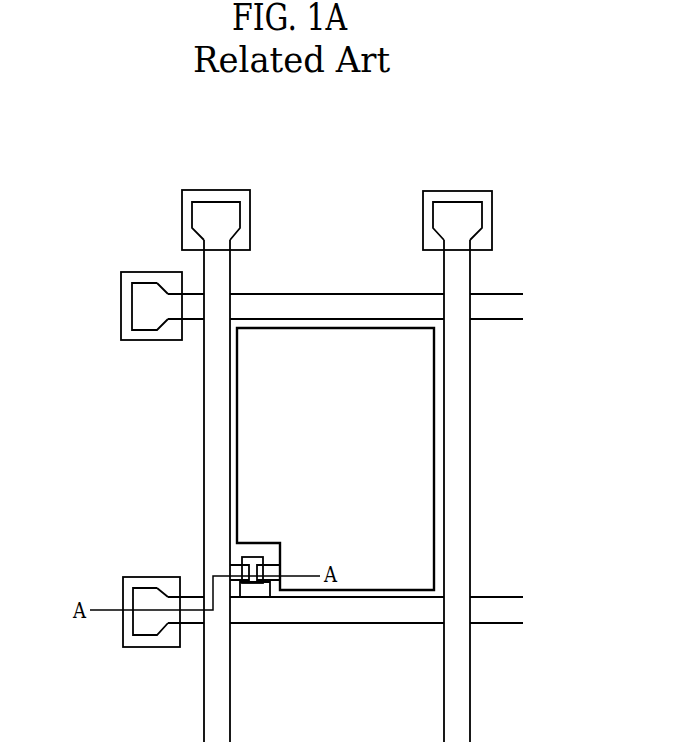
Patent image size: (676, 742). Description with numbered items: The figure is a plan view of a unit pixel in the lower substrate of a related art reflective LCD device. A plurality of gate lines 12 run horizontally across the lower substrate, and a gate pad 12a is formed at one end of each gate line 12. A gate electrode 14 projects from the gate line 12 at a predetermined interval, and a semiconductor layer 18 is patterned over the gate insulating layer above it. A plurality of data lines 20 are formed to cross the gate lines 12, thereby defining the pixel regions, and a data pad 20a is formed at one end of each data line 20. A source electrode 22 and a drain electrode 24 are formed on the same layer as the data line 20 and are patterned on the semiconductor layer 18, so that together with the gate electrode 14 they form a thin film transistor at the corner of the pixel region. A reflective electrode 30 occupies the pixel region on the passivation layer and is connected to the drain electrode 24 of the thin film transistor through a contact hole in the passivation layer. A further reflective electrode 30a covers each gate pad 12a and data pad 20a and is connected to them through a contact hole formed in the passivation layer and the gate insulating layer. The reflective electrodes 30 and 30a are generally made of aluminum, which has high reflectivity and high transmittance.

The gate line 12 is at (302, 305).
The gate pad 12a is at (140, 312).
The gate electrode 14 is at (250, 595).
The semiconductor layer 18 is at (252, 562).
The data line 20 is at (460, 530).
The data pad 20a is at (215, 207).
The source electrode 22 is at (228, 570).
The drain electrode 24 is at (280, 570).
The reflective electrode 30 is at (427, 487).
The reflective electrode 30a is at (186, 202).